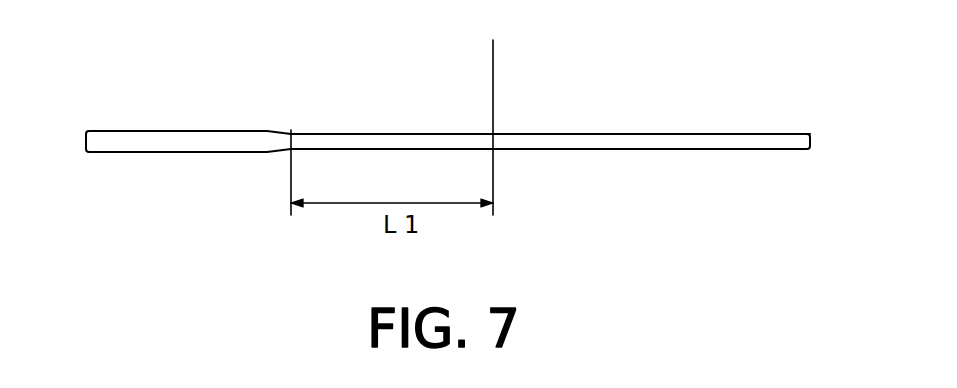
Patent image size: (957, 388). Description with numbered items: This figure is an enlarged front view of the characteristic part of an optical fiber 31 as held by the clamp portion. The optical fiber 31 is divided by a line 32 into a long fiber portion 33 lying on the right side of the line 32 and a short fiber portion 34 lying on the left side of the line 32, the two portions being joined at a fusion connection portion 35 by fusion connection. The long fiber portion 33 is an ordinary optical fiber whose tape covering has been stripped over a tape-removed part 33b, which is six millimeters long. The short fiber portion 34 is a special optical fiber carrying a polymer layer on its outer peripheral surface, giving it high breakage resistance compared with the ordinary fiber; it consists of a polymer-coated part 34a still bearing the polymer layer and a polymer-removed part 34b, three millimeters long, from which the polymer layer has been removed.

The optical fiber 31 is at (706, 130).
The line 32 is at (493, 62).
The long fiber portion 33 is at (715, 149).
The tape-removed part 33b is at (593, 135).
The short fiber portion 34 is at (139, 152).
The polymer-coated part 34a is at (217, 152).
The polymer-removed part 34b is at (357, 133).
The fusion connection portion 35 is at (493, 150).